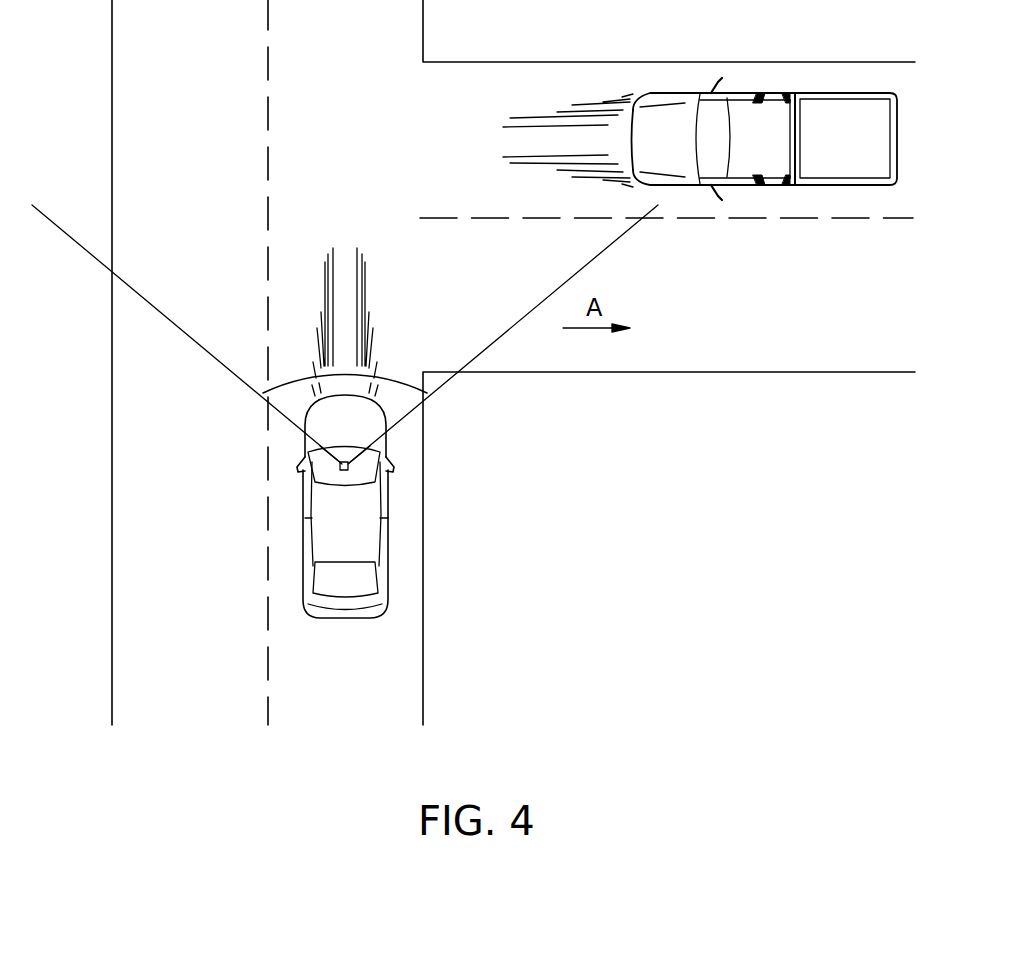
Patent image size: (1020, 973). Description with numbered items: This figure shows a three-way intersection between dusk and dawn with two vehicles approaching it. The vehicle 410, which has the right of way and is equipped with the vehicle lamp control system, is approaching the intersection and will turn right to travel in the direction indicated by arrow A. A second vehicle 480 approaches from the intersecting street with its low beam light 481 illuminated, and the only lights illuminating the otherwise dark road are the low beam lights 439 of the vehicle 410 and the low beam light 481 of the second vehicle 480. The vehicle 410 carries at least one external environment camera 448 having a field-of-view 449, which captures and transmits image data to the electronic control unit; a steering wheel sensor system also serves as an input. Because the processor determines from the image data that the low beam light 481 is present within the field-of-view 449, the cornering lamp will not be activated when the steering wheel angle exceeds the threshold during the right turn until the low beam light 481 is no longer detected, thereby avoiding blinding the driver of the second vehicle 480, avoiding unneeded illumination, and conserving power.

The vehicle 410 is at (387, 597).
The external environment camera 448 is at (352, 467).
The field-of-view 449 is at (398, 383).
The low beam lights 439 is at (375, 317).
The second vehicle 480 is at (827, 92).
The low beam light 481 is at (562, 102).